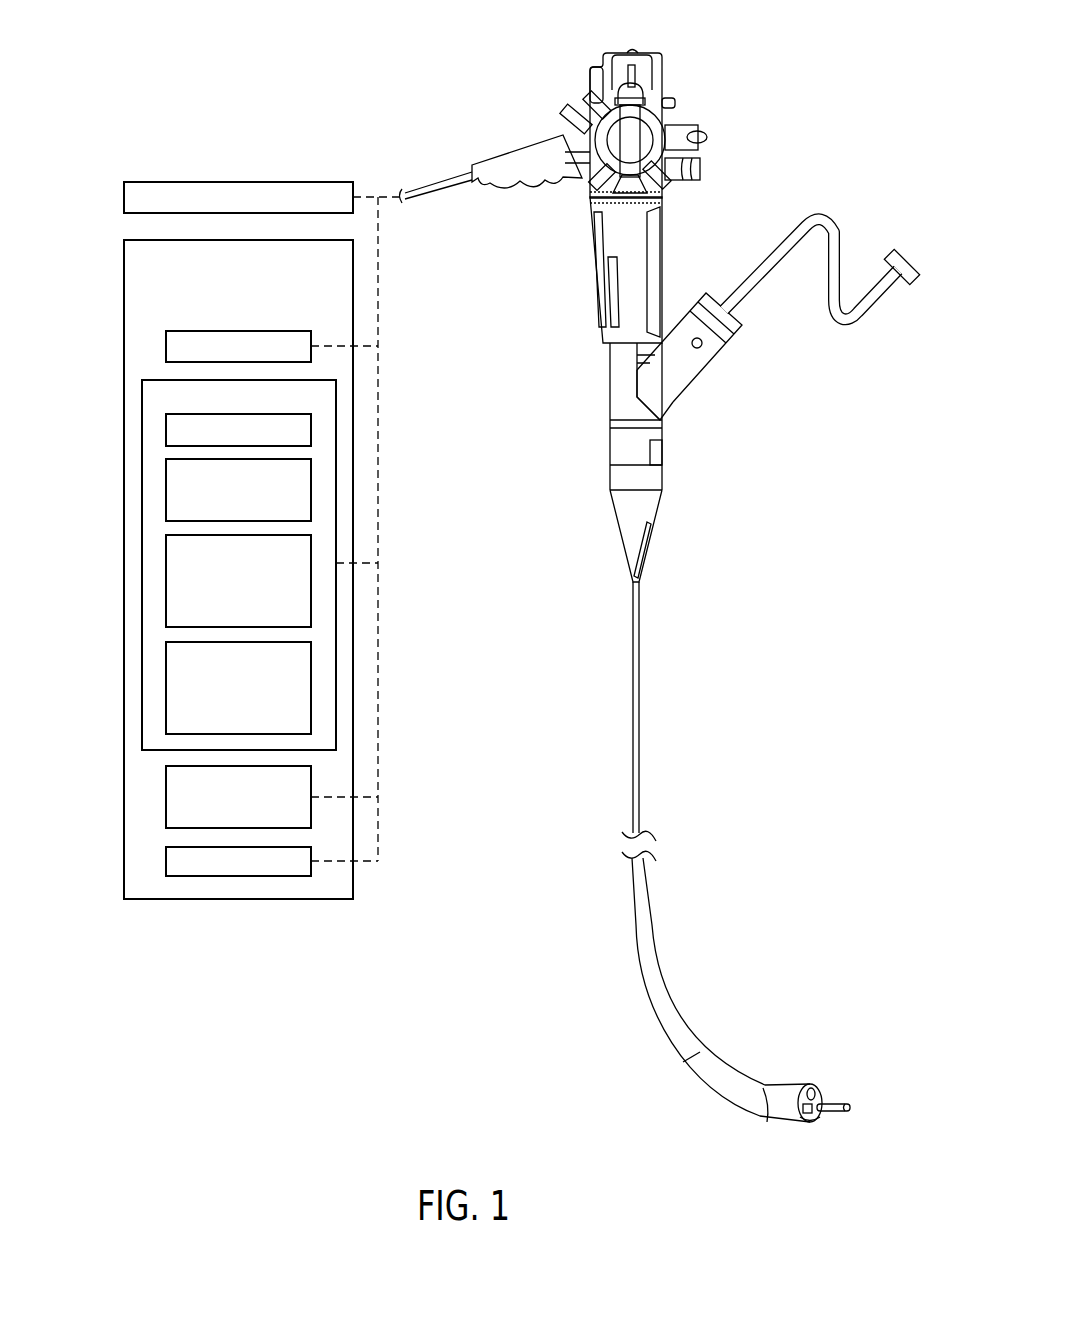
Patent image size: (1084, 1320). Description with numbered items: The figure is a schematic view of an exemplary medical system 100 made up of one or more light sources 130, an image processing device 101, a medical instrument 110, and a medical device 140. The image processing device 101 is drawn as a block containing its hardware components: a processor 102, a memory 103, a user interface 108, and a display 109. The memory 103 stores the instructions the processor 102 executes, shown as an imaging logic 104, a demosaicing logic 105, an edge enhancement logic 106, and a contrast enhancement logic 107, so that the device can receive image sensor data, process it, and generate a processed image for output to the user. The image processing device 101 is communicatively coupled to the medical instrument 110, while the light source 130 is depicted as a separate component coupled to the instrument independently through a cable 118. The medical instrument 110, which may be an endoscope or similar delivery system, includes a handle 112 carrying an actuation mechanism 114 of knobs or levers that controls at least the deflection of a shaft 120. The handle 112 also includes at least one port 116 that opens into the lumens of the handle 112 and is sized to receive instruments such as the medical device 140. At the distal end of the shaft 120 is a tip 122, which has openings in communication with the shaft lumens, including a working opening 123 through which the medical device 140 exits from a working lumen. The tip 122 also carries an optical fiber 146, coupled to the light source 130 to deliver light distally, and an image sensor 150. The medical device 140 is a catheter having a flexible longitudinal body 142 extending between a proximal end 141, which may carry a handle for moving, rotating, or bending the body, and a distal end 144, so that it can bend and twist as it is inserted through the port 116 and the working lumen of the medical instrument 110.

The medical system 100 is at (207, 110).
The image processing device 101 is at (124, 253).
The processor 102 is at (166, 345).
The memory 103 is at (142, 392).
The imaging logic 104 is at (166, 430).
The demosaicing logic 105 is at (166, 490).
The edge enhancement logic 106 is at (166, 580).
The contrast enhancement logic 107 is at (166, 688).
The user interface 108 is at (166, 798).
The display 109 is at (166, 862).
The medical instrument 110 is at (616, 617).
The handle 112 is at (665, 261).
The actuation mechanism 114 is at (676, 118).
The port 116 is at (707, 358).
The umbilical cable to light source 118 is at (447, 178).
The shaft 120 is at (652, 962).
The tip 122 is at (837, 1093).
The working opening 123 is at (818, 1115).
The light source 130 is at (124, 193).
The medical device 140 is at (837, 311).
The proximal end 141 is at (906, 254).
The longitudinal body 142 is at (878, 278).
The distal end 144 is at (856, 1117).
The optical fiber 146 is at (806, 1084).
The image sensor 150 is at (804, 1116).